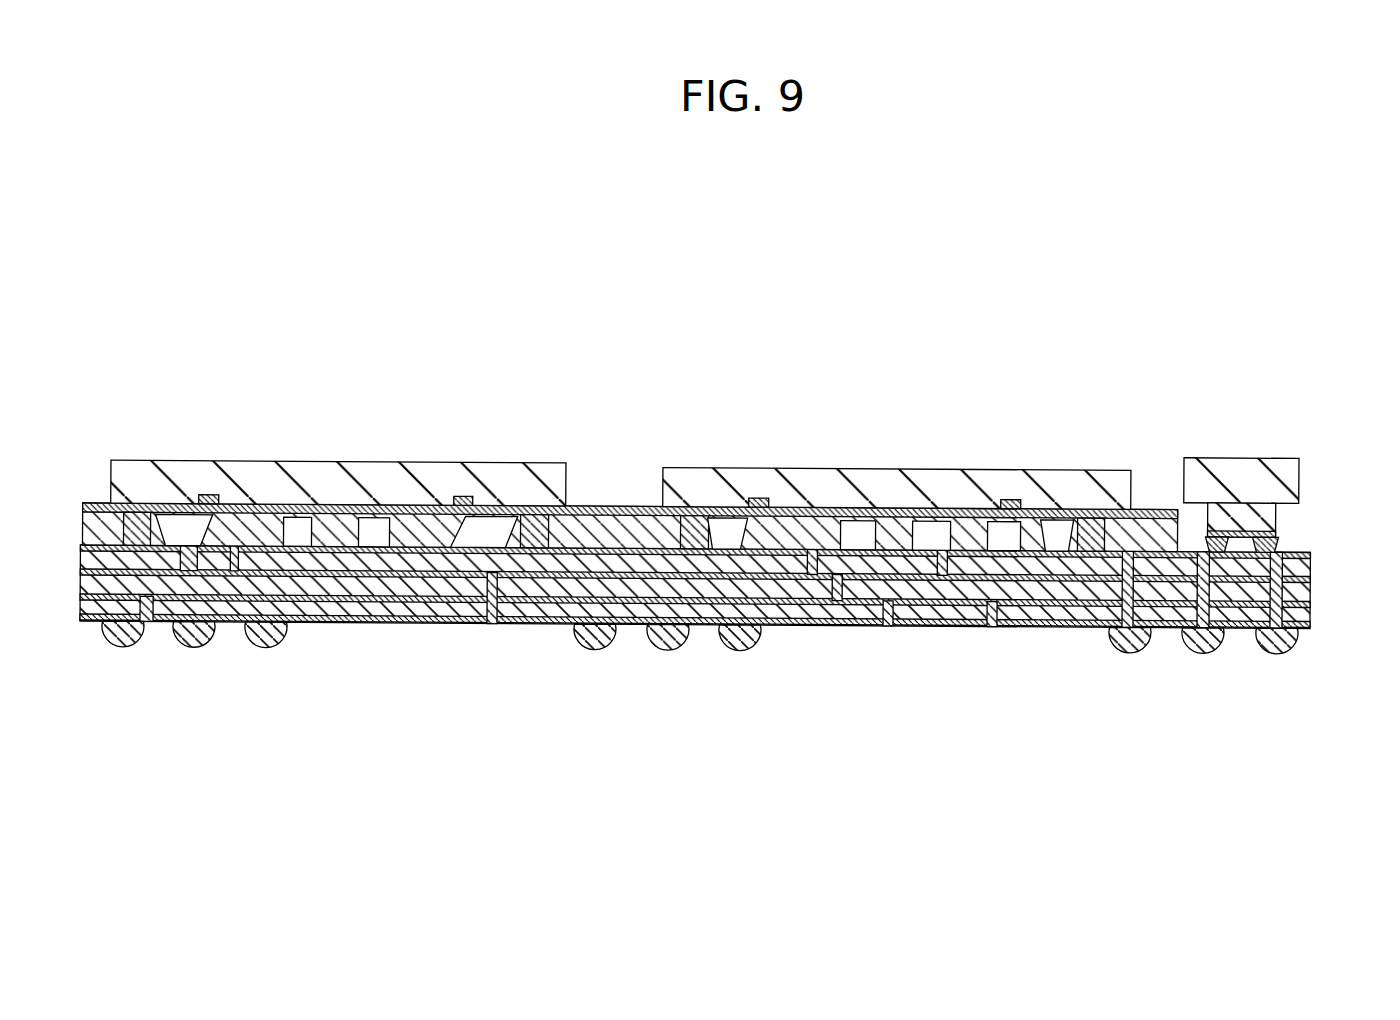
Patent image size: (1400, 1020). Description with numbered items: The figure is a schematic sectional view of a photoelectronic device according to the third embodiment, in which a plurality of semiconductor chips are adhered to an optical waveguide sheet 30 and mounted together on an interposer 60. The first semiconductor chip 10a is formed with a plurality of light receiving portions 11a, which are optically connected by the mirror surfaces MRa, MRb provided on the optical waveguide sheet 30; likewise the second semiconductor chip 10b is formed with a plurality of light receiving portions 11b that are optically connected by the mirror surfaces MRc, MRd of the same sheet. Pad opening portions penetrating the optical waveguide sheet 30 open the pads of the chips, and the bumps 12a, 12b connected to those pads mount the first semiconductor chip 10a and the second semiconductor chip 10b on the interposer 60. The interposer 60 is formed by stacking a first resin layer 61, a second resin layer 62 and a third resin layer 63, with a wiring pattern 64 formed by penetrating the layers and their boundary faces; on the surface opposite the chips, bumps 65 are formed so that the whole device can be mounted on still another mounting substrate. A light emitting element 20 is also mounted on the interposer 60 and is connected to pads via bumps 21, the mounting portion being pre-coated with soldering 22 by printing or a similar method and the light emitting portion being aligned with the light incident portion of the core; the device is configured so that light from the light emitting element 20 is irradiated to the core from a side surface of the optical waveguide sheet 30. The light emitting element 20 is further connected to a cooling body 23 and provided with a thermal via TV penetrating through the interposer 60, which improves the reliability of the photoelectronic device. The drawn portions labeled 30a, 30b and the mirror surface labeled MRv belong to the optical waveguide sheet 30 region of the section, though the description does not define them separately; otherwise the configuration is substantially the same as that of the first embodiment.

The first semiconductor chip 10a is at (547, 470).
The second semiconductor chip 10b is at (835, 471).
The light receiving portions 11a is at (453, 490).
The light receiving portions 11b is at (757, 489).
The bumps 12a is at (533, 498).
The bumps 12b is at (1100, 500).
The light emitting element 20 is at (1276, 497).
The bumps 21 is at (1278, 518).
The soldering 22 is at (1284, 540).
The cooling body 23 is at (1258, 456).
The optical waveguide sheet 30 is at (945, 432).
The chip portion 30a is at (949, 516).
The chip portion 30b is at (986, 516).
The interposer 60 is at (1313, 546).
The first resin layer 61 is at (928, 608).
The second resin layer 62 is at (950, 605).
The third resin layer 63 is at (1068, 606).
The wiring pattern 64 is at (1102, 606).
The bumps 65 is at (192, 654).
The thermal via TV is at (1285, 653).
The mirror surface MRa is at (181, 503).
The mirror surface MRb is at (497, 500).
The mirror surface MRc is at (706, 498).
The mirror surface MRd is at (1046, 514).
The via mark region MRv is at (293, 503).